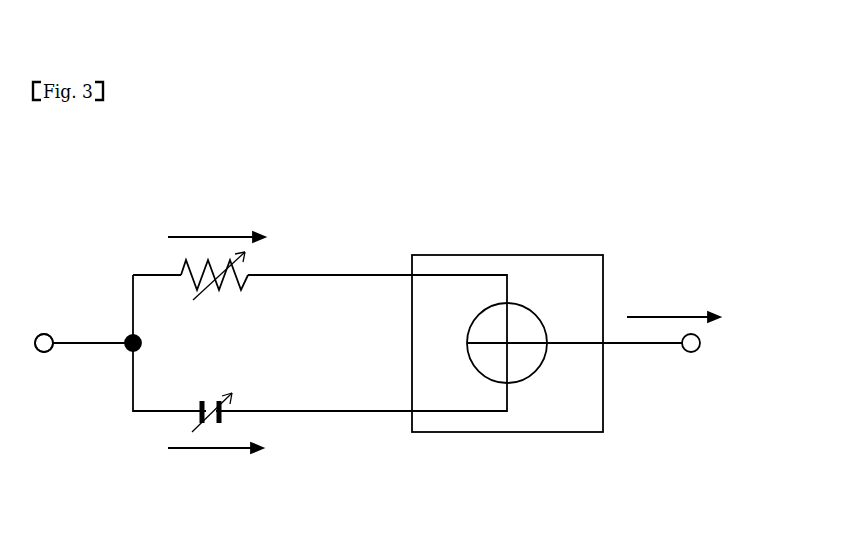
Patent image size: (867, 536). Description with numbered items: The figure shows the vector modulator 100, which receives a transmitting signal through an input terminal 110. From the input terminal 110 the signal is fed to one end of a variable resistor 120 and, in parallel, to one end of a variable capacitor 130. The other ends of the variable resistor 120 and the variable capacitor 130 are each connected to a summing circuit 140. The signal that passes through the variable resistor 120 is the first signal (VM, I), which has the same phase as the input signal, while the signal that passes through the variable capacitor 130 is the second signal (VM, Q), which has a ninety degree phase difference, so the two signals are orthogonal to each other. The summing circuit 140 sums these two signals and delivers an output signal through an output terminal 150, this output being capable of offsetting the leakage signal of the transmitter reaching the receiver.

The vector modulator 100 is at (88, 233).
The input terminal 110 is at (44, 352).
The variable resistor 120 is at (221, 289).
The variable capacitor 130 is at (221, 399).
The summing circuit 140 is at (586, 256).
The output terminal 150 is at (697, 351).